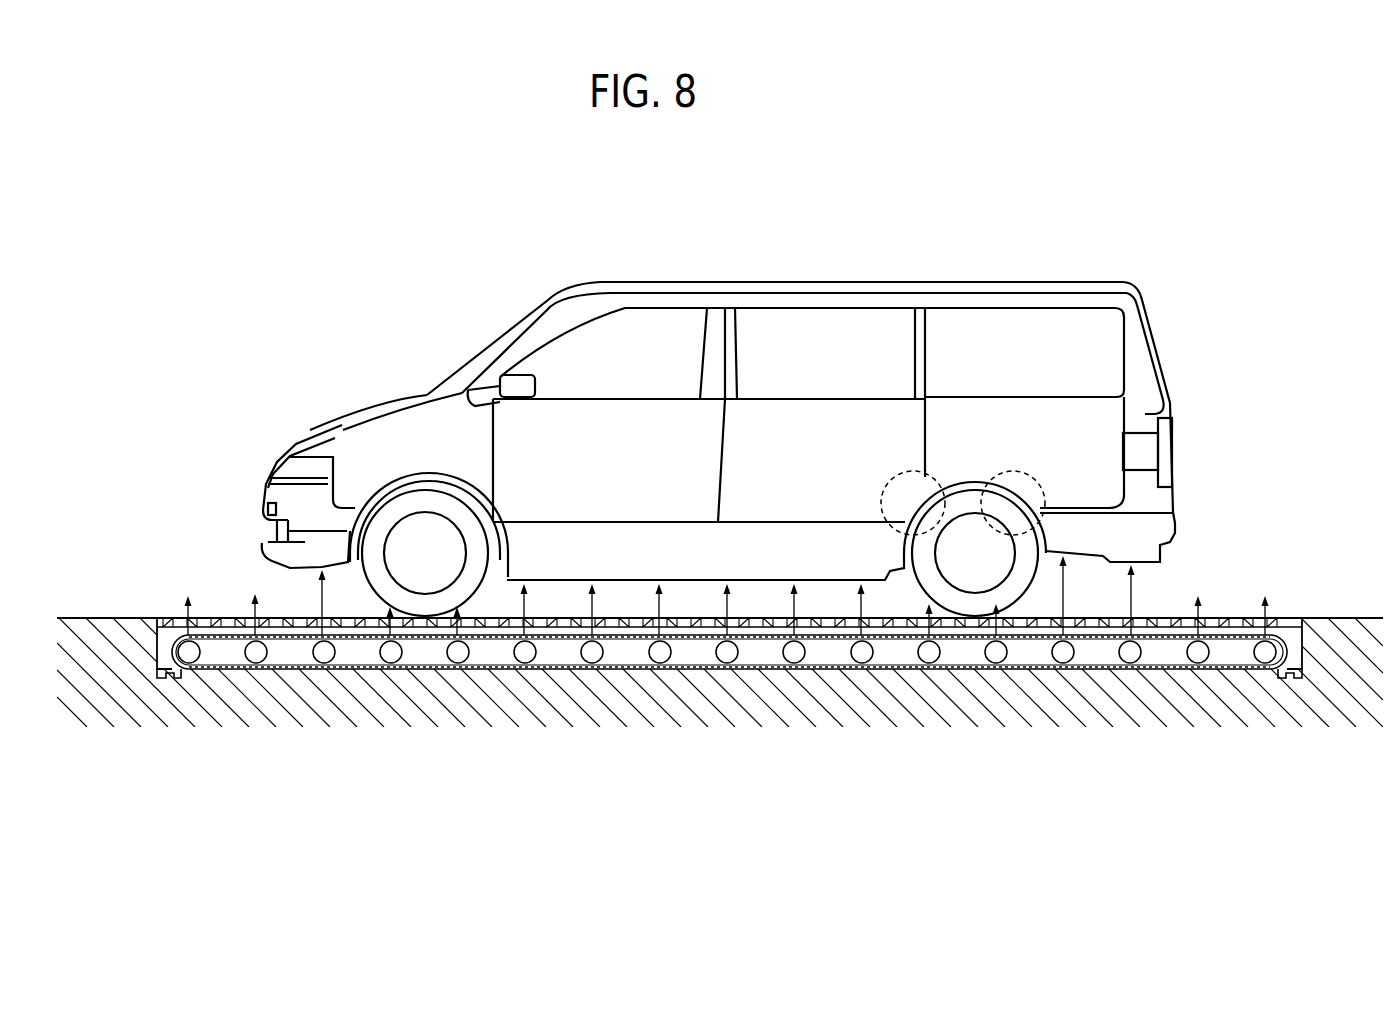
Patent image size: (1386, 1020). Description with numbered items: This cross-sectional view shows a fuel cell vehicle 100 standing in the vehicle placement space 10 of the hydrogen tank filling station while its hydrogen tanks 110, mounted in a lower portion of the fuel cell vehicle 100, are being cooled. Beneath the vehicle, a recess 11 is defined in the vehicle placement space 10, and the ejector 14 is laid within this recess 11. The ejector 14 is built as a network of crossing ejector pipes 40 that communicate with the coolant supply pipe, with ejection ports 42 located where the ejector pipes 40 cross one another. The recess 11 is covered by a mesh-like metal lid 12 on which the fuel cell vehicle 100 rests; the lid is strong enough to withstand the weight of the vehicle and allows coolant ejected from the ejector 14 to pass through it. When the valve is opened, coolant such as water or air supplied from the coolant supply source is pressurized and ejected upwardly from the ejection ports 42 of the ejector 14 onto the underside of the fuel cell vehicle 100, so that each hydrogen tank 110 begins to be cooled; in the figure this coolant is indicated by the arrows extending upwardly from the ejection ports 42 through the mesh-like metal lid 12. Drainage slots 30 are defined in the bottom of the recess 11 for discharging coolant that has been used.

The vehicle placement space 10 is at (1353, 614).
The recess 11 is at (1293, 636).
The mesh-like metal lid 12 is at (1217, 613).
The ejector 14 is at (1092, 614).
The drainage slots 30 is at (148, 670).
The ejector pipes 40 is at (207, 638).
The ejection ports 42 is at (262, 637).
The fuel cell vehicle 100 is at (827, 281).
The hydrogen tank 110 is at (908, 471).